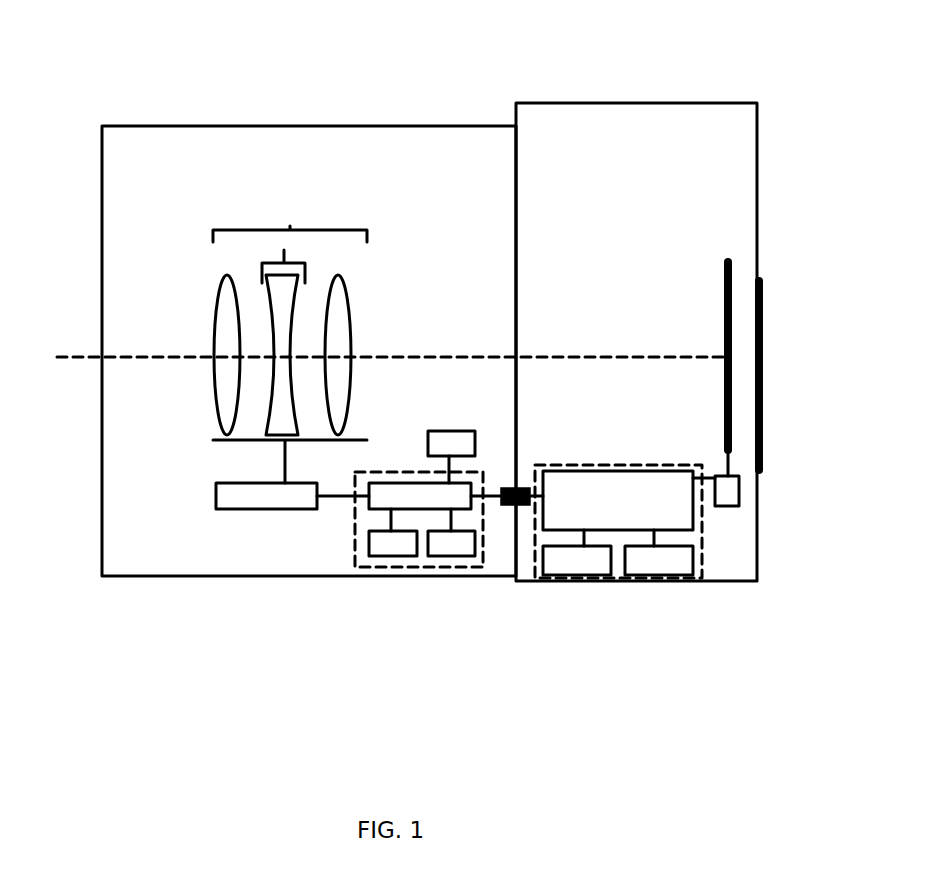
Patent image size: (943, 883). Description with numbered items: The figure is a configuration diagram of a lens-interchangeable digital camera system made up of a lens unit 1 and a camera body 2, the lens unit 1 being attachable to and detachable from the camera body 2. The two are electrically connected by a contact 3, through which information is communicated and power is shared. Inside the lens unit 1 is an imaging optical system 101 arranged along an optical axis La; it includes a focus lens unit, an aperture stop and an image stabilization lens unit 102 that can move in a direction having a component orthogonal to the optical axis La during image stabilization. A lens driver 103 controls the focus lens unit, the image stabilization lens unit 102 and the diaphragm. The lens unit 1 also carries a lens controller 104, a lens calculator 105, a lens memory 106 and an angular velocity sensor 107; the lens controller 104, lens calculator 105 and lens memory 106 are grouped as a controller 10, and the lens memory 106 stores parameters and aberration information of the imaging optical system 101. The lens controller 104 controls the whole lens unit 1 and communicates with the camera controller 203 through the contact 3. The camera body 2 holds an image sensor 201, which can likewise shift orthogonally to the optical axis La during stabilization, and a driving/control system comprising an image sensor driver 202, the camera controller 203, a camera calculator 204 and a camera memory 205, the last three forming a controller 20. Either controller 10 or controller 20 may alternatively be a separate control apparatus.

The lens unit 1 is at (185, 126).
The camera body 2 is at (602, 103).
The optical axis La is at (70, 357).
The imaging optical system 101 is at (290, 226).
The image stabilization lens unit 102 is at (284, 250).
The lens driver 103 is at (283, 509).
The lens controller 104 is at (372, 509).
The lens calculator 105 is at (385, 556).
The lens memory 106 is at (452, 556).
The angular velocity sensor 107 is at (449, 431).
The controller 10 is at (358, 567).
The contact 3 is at (512, 505).
The controller 20 is at (702, 560).
The image sensor 201 is at (732, 262).
The image sensor driver 202 is at (727, 476).
The camera controller 203 is at (582, 471).
The camera calculator 204 is at (577, 575).
The camera memory 205 is at (662, 575).